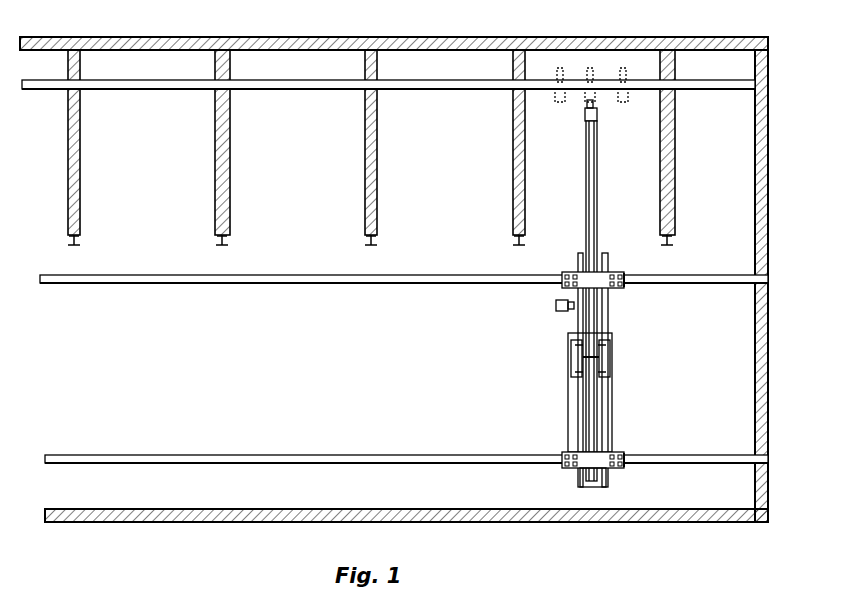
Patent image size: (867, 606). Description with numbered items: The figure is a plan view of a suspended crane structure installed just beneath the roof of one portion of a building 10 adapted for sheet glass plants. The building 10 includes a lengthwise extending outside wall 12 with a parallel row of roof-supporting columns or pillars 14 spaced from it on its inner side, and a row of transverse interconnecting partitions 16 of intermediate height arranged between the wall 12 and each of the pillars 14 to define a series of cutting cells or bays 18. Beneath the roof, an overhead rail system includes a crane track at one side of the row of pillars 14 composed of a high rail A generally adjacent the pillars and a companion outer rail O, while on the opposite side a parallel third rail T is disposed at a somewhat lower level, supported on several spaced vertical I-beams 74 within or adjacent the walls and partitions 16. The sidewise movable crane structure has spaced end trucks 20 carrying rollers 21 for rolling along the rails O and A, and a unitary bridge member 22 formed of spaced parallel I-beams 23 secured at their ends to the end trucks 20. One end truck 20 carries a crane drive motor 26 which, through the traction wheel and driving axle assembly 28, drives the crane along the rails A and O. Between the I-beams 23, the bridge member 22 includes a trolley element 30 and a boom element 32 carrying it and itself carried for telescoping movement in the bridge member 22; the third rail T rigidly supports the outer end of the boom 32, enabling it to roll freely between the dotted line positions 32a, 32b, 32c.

The building 10 is at (358, 44).
The outside wall 12 is at (420, 44).
The roof-supporting columns or pillars 14 is at (226, 242).
The transverse interconnecting partitions 16 is at (68, 136).
The cutting cells or bays 18 is at (161, 62).
The end trucks 20 is at (624, 287).
The rollers 21 is at (623, 274).
The unitary bridge member 22 is at (582, 484).
The I-beams 23 is at (608, 400).
The crane drive motor 26 is at (556, 306).
The traction wheel and driving axle assembly 28 is at (568, 405).
The trolley element 30 is at (610, 357).
The boom element 32 is at (586, 124).
The dotted line position of boom 32a is at (590, 68).
The dotted line position of boom 32b is at (623, 68).
The dotted line position of boom 32c is at (560, 68).
The vertical I-beams 74 is at (760, 83).
The high rail A is at (292, 285).
The outer rail O is at (292, 465).
The third rail T is at (304, 90).